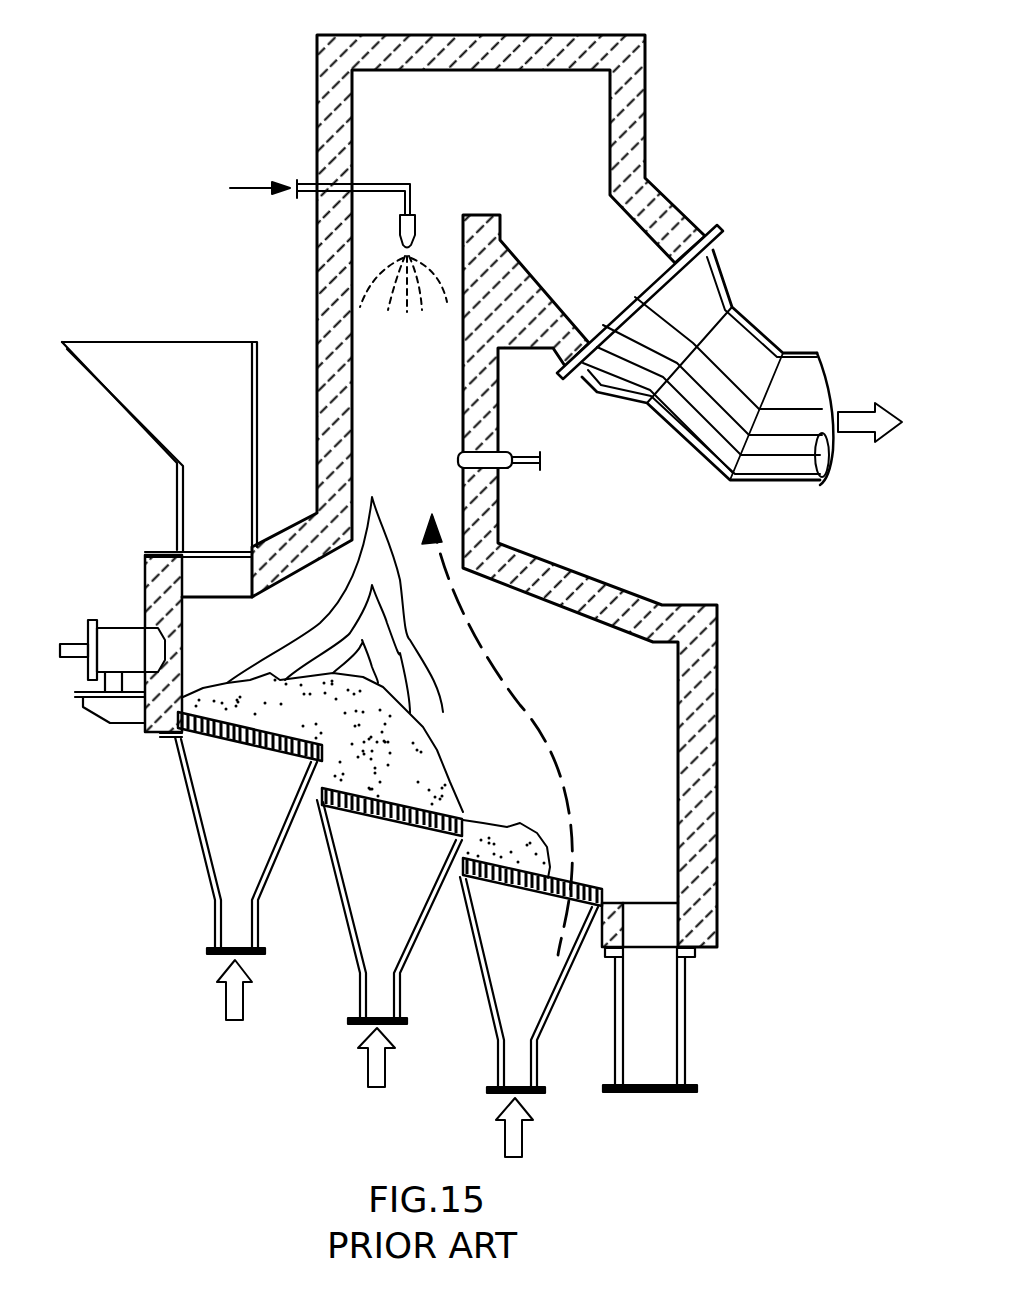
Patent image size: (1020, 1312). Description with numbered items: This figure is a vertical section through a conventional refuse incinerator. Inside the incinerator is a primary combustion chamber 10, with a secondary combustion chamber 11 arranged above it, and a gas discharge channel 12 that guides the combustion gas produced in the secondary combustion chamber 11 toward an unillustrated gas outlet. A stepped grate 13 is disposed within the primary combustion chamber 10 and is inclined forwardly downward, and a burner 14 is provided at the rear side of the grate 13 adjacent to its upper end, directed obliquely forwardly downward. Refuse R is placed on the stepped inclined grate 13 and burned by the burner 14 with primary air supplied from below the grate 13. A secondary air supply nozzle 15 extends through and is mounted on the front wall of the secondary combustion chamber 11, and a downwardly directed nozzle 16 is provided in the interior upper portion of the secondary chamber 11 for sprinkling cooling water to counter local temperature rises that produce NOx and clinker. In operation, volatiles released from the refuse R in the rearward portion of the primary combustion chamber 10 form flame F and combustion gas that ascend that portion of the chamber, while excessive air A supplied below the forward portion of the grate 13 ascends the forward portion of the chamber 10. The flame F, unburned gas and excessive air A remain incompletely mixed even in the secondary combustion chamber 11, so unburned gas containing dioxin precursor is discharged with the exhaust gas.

The primary combustion chamber 10 is at (567, 632).
The secondary combustion chamber 11 is at (377, 338).
The gas discharge channel 12 is at (573, 160).
The stepped grate 13 is at (272, 757).
The burner 14 is at (117, 637).
The secondary air supply nozzle 15 is at (503, 450).
The nozzle 16 is at (415, 228).
The excessive air A is at (508, 690).
The flame F is at (447, 706).
The refuse R is at (520, 830).